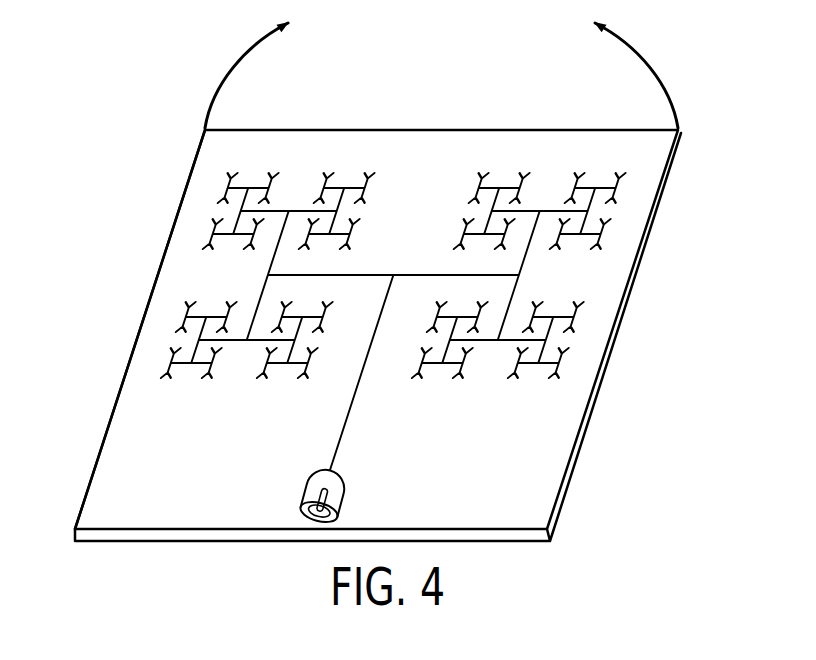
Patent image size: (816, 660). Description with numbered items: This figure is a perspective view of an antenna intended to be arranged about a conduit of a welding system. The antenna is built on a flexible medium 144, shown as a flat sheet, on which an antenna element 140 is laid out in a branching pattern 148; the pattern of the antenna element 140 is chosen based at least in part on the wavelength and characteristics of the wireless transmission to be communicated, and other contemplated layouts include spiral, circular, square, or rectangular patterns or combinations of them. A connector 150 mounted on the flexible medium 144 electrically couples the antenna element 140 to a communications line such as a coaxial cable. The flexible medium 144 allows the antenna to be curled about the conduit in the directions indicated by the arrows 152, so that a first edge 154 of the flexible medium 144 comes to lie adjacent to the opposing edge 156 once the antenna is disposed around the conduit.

The antenna element 140 is at (377, 275).
The flexible medium 144 is at (430, 157).
The branching pattern 148 is at (482, 387).
The connector 150 is at (306, 490).
The arrows 152 is at (233, 72).
The first edge 154 is at (118, 322).
The opposing edge 156 is at (625, 322).